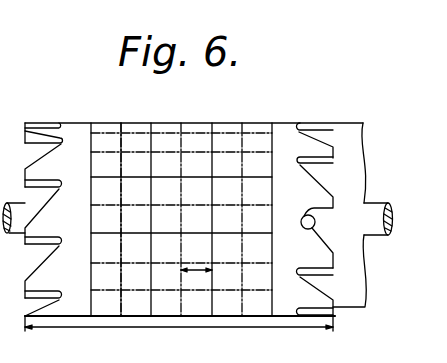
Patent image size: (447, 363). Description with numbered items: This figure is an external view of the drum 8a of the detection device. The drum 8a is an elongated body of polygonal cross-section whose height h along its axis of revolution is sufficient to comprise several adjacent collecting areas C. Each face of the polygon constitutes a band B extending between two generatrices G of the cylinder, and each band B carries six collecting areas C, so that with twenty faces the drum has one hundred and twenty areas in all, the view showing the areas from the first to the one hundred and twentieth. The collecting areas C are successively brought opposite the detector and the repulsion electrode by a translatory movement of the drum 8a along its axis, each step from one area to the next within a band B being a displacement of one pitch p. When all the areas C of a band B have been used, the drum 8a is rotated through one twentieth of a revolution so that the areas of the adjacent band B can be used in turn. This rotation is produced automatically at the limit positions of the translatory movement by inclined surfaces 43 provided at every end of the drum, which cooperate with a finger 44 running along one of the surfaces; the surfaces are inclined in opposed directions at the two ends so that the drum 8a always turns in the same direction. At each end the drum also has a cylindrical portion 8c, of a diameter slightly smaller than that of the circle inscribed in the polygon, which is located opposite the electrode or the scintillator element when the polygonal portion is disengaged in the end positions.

The cylindrical portion 8c is at (70, 133).
The drum 8a is at (203, 318).
The inclined surfaces 43 is at (33, 223).
The finger 44 is at (315, 222).
The band B is at (90, 156).
The generatrices G is at (127, 152).
The collecting areas C is at (197, 152).
The pitch p is at (196, 279).
The height h is at (179, 334).